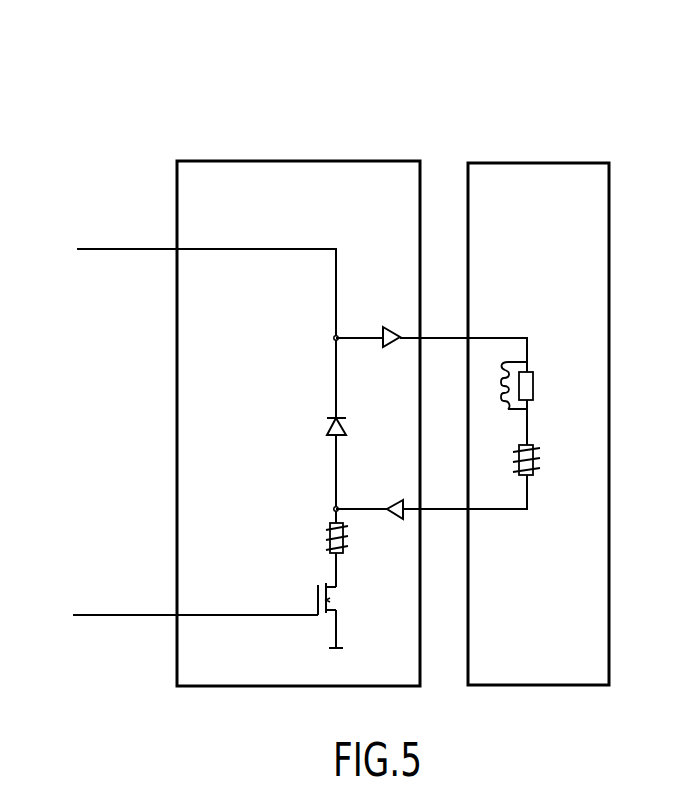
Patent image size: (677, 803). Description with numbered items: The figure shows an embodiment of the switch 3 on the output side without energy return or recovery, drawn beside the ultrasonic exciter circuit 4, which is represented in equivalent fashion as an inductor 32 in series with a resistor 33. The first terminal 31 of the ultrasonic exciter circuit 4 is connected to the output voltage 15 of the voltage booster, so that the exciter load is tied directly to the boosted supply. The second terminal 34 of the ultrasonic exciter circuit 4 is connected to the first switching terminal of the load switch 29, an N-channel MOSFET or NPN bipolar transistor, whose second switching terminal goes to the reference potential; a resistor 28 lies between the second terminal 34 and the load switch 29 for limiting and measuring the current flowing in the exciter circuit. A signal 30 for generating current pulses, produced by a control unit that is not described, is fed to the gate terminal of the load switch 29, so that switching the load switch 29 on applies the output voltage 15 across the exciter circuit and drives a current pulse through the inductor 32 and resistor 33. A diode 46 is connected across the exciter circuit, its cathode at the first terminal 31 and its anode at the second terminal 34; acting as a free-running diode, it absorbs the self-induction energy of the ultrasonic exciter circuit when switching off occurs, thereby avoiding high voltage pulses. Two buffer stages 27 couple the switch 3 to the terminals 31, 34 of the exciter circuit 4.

The switch on the output side 3 is at (352, 161).
The ultrasonic exciter circuit 4 is at (531, 162).
The output voltage 15 is at (126, 247).
The buffer amplifiers 27 is at (387, 349).
The resistor 28 is at (345, 539).
The load switch 29 is at (336, 600).
The signal for generating current pulses 30 is at (103, 617).
The first terminal of the ultrasonic exciter circuit 31 is at (497, 338).
The inductor 32 is at (535, 383).
The resistor 33 is at (540, 458).
The second terminal of the ultrasonic exciter circuit 34 is at (489, 510).
The diode 46 is at (339, 419).